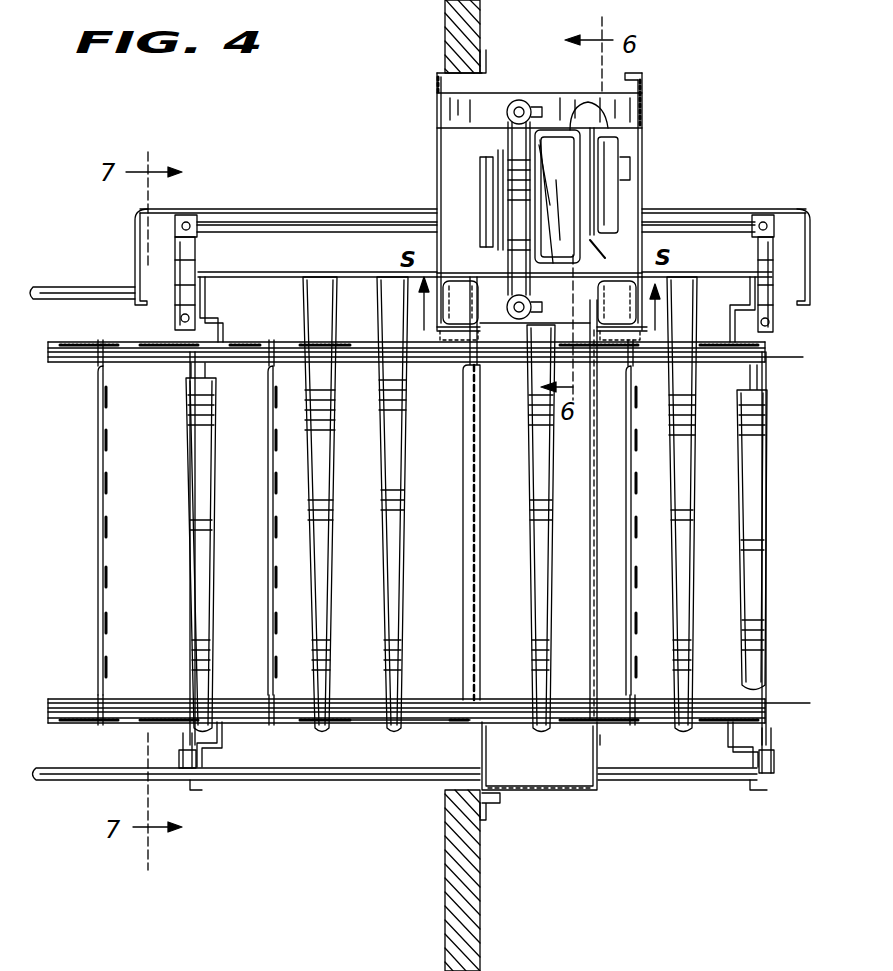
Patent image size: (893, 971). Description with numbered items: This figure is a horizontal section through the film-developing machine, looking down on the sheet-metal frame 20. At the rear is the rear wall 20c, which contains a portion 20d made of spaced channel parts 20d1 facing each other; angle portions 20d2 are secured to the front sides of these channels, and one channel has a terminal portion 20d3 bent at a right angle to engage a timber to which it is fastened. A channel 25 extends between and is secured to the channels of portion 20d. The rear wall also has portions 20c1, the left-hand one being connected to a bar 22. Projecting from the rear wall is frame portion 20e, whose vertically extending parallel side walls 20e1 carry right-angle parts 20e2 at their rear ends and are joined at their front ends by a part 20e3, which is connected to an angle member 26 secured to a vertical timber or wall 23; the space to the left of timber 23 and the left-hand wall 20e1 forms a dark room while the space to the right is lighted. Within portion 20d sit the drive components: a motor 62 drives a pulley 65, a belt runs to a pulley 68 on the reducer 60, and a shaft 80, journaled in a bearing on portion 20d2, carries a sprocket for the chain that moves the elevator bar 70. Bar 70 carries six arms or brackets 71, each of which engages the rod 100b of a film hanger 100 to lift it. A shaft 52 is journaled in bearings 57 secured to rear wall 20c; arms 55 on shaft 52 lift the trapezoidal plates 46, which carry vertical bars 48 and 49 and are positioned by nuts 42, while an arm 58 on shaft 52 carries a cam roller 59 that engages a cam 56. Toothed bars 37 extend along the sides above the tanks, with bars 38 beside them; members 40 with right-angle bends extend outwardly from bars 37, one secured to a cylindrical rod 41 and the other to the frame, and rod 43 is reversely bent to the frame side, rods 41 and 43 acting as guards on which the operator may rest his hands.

The frame 20 is at (614, 736).
The rear wall 20c is at (268, 195).
The portion of rear wall 20c1 is at (133, 272).
The portion of rear wall 20d is at (648, 174).
The channel part 20d1 is at (437, 103).
The angle portion 20d2 is at (527, 337).
The terminal portion 20d3 is at (484, 68).
The frame portion 20e is at (488, 492).
The side wall 20e1 is at (588, 552).
The rear end part 20e2 is at (462, 330).
The connecting part 20e3 is at (520, 786).
The bar 22 is at (70, 293).
The vertical timber or wall 23 is at (470, 942).
The channel 25 is at (496, 96).
The angle member 26 is at (498, 806).
The toothed bar 37 is at (338, 342).
The bar 38 is at (432, 722).
The member 40 is at (220, 740).
The cylindrical rod 41 is at (692, 780).
The nuts 42 is at (222, 330).
The rod 43 is at (288, 780).
The trapezoidal plate 46 is at (189, 700).
The vertical bar 48 is at (772, 748).
The vertical bar 49 is at (182, 748).
The shaft 52 is at (358, 222).
The arm 55 is at (174, 315).
The cam 56 is at (586, 102).
The bearing 57 is at (207, 214).
The arm 58 is at (610, 246).
The cam roller 59 is at (575, 165).
The reducer 60 is at (553, 130).
The motor 62 is at (622, 153).
The pulley 65 is at (479, 182).
The pulley 68 is at (496, 216).
The elevator bar 70 is at (257, 272).
The arm or bracket 71 is at (216, 392).
The shaft 80 is at (503, 150).
The film hanger 100 is at (96, 527).
The rod 100b is at (104, 372).